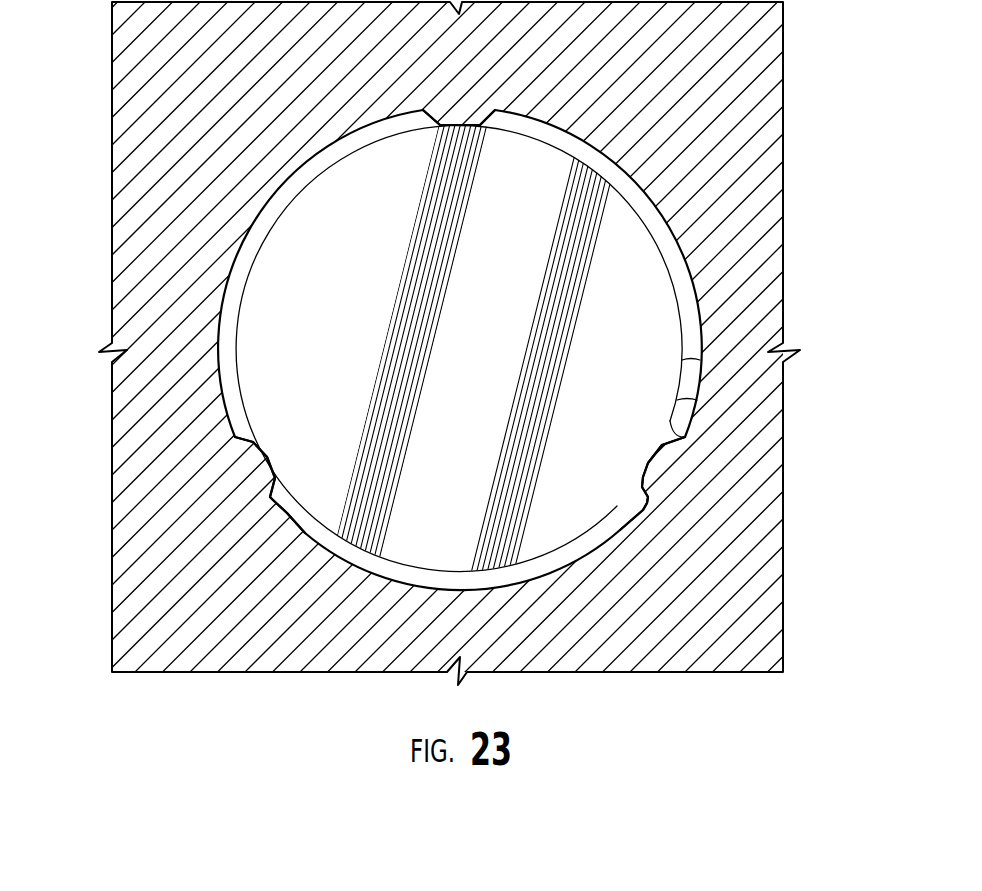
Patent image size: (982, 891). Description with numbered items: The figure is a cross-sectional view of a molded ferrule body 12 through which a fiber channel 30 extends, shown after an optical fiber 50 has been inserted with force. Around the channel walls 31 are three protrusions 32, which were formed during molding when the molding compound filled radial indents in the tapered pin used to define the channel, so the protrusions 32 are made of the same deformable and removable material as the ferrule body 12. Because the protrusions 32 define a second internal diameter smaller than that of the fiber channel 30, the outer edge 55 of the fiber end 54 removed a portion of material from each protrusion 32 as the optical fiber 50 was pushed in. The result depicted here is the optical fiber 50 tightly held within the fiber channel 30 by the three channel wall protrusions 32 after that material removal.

The ferrule body 12 is at (172, 109).
The fiber channel 30 is at (228, 322).
The channel walls 31 is at (522, 116).
The protrusions 32 is at (436, 125).
The optical fiber 50 is at (663, 247).
The fiber end 54 is at (633, 277).
The outer edge 55 is at (683, 360).